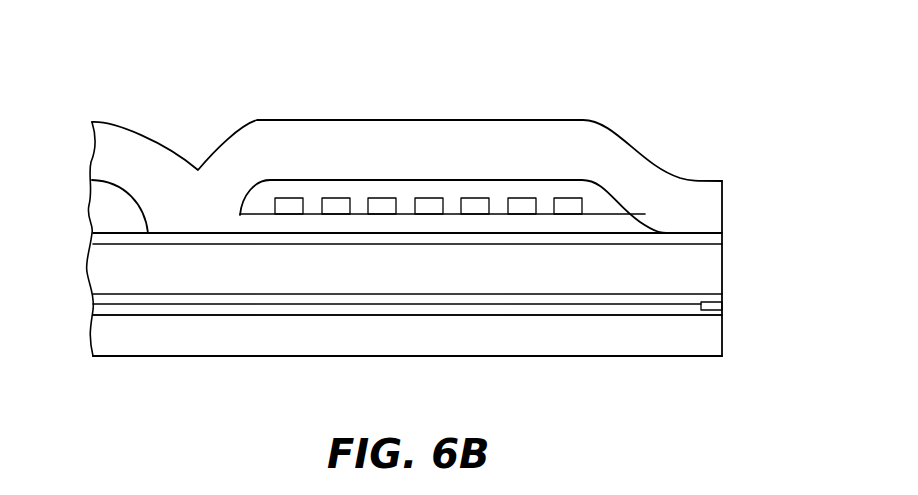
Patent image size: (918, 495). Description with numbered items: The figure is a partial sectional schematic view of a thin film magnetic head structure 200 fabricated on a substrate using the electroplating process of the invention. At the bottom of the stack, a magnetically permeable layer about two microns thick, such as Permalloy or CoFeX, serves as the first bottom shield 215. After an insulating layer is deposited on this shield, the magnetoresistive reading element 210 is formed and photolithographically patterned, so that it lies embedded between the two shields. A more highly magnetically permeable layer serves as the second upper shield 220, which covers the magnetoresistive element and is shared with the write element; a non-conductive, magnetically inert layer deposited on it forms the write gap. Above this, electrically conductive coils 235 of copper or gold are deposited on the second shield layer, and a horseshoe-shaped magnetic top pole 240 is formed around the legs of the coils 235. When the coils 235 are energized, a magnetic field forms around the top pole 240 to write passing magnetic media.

The magnetic head structure 200 is at (483, 88).
The magnetoresistive reading element 210 is at (722, 306).
The first bottom shield 215 is at (418, 349).
The second upper shield 220 is at (418, 285).
The electrically conductive coils 235 is at (342, 198).
The magnetic top pole 240 is at (433, 165).